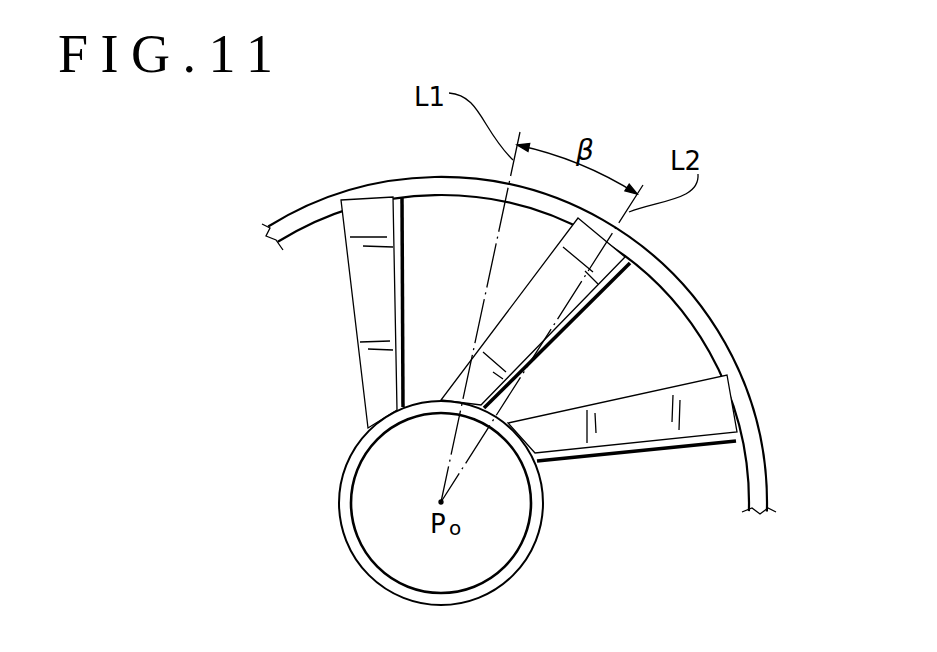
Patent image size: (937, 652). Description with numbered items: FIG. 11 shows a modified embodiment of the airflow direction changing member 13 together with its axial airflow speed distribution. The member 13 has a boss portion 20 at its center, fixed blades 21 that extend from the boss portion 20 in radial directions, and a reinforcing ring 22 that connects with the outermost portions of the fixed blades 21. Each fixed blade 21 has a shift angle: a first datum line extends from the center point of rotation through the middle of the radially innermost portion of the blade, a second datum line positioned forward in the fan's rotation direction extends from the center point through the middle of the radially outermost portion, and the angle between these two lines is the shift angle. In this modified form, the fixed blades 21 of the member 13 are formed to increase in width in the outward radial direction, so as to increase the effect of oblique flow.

The airflow direction changing member 13 is at (699, 247).
The boss portion 20 is at (526, 554).
The fixed blade 21 is at (365, 223).
The reinforcing ring 22 is at (713, 333).